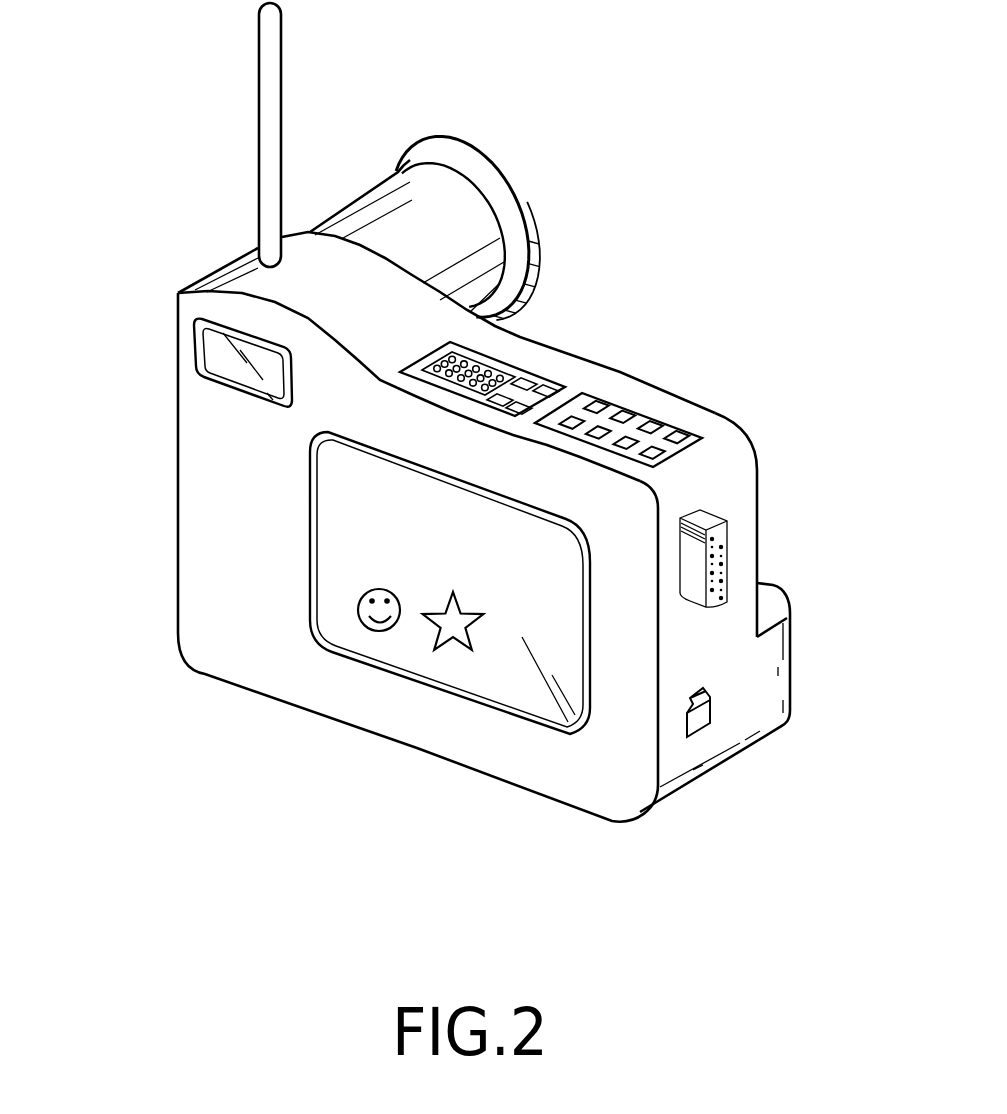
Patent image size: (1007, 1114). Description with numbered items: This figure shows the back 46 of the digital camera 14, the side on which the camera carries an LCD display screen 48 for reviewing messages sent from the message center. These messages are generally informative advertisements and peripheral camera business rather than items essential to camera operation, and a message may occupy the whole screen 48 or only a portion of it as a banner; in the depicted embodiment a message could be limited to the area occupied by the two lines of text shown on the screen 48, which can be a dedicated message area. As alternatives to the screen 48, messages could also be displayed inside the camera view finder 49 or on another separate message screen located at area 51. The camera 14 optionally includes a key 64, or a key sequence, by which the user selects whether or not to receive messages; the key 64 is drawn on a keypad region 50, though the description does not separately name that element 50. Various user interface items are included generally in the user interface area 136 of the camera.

The camera 14 is at (758, 456).
The back of the camera 46 is at (450, 637).
The LCD display screen 48 is at (417, 662).
The camera view finder 49 is at (217, 350).
The keypad 50 is at (661, 395).
The area 51 is at (433, 347).
The key 64 is at (602, 403).
The user interface area 136 is at (542, 334).